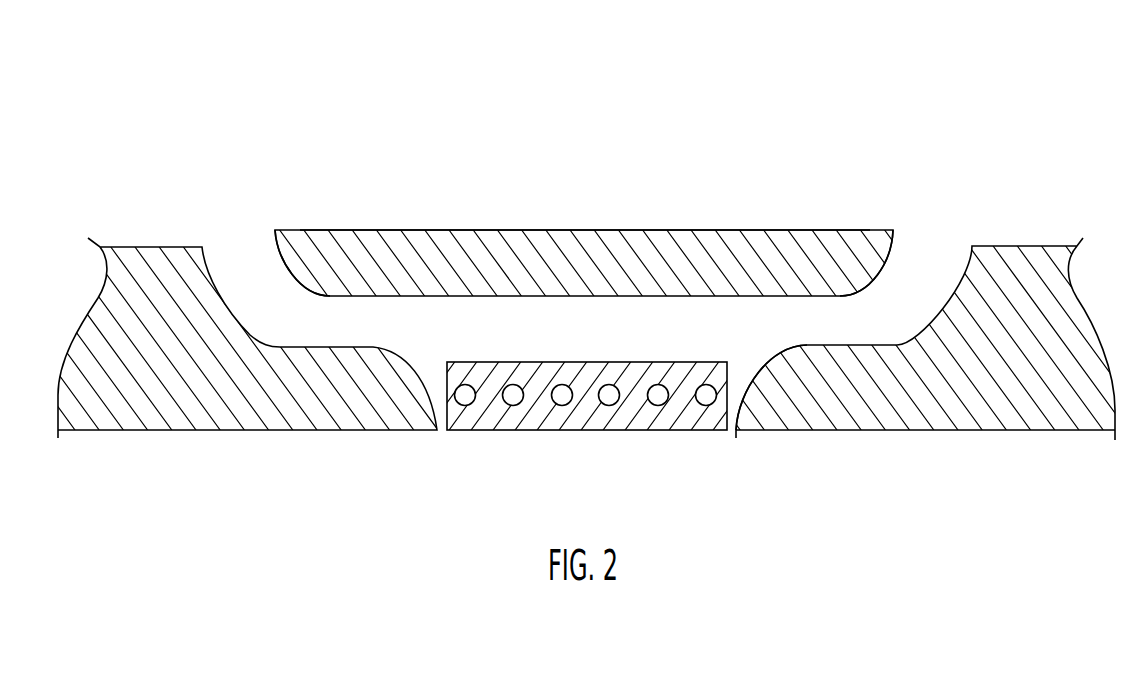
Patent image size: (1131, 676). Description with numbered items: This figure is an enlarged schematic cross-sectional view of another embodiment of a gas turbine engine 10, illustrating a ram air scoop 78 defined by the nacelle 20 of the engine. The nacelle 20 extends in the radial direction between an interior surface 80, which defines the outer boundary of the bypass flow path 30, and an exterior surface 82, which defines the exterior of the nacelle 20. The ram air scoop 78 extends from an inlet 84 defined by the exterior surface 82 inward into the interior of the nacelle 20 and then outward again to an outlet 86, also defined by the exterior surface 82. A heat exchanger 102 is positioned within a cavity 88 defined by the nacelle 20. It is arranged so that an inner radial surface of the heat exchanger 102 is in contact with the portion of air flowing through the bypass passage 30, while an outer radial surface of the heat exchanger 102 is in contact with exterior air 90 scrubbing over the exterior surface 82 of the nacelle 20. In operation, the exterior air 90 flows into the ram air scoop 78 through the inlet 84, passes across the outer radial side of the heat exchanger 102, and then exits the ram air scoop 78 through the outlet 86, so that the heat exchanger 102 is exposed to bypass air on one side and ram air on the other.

The aircraft propulsion system 10 is at (192, 87).
The nacelle 20 is at (383, 182).
The bypass flow path 30 is at (320, 474).
The ram air scoop 78 is at (597, 341).
The interior surface 80 is at (882, 431).
The exterior surface 82 is at (792, 230).
The inlet 84 is at (266, 220).
The outlet 86 is at (917, 234).
The cavity 88 is at (741, 366).
The exterior air 90 is at (242, 229).
The heat exchanger 102 is at (590, 431).